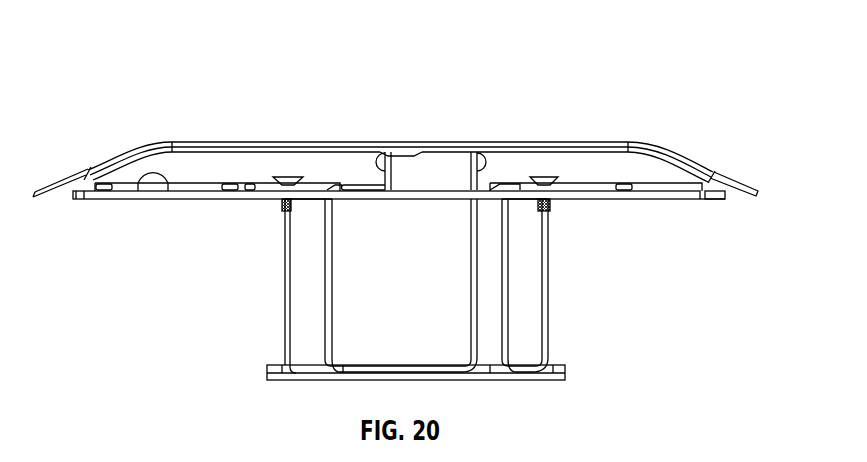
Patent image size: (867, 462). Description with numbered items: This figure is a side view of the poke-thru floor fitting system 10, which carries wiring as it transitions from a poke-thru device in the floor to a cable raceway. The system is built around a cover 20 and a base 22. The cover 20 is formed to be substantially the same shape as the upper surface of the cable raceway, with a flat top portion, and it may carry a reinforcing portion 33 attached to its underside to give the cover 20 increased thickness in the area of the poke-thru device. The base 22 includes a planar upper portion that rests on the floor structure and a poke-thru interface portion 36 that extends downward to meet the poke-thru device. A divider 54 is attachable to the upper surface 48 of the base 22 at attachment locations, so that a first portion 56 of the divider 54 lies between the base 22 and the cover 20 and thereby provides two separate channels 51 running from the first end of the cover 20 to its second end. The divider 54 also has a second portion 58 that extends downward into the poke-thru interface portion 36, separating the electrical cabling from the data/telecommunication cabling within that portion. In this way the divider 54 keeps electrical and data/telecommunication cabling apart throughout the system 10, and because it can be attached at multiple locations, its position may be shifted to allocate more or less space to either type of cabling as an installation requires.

The poke-thru floor fitting system 10 is at (111, 92).
The cover 20 is at (685, 157).
The reinforcing portion 33 is at (80, 186).
The channels 51 is at (250, 177).
The base 22 is at (83, 199).
The upper surface 48 is at (145, 194).
The divider 54 is at (380, 150).
The first portion 56 is at (482, 152).
The second portion 58 is at (470, 282).
The poke-thru interface portion 36 is at (548, 292).